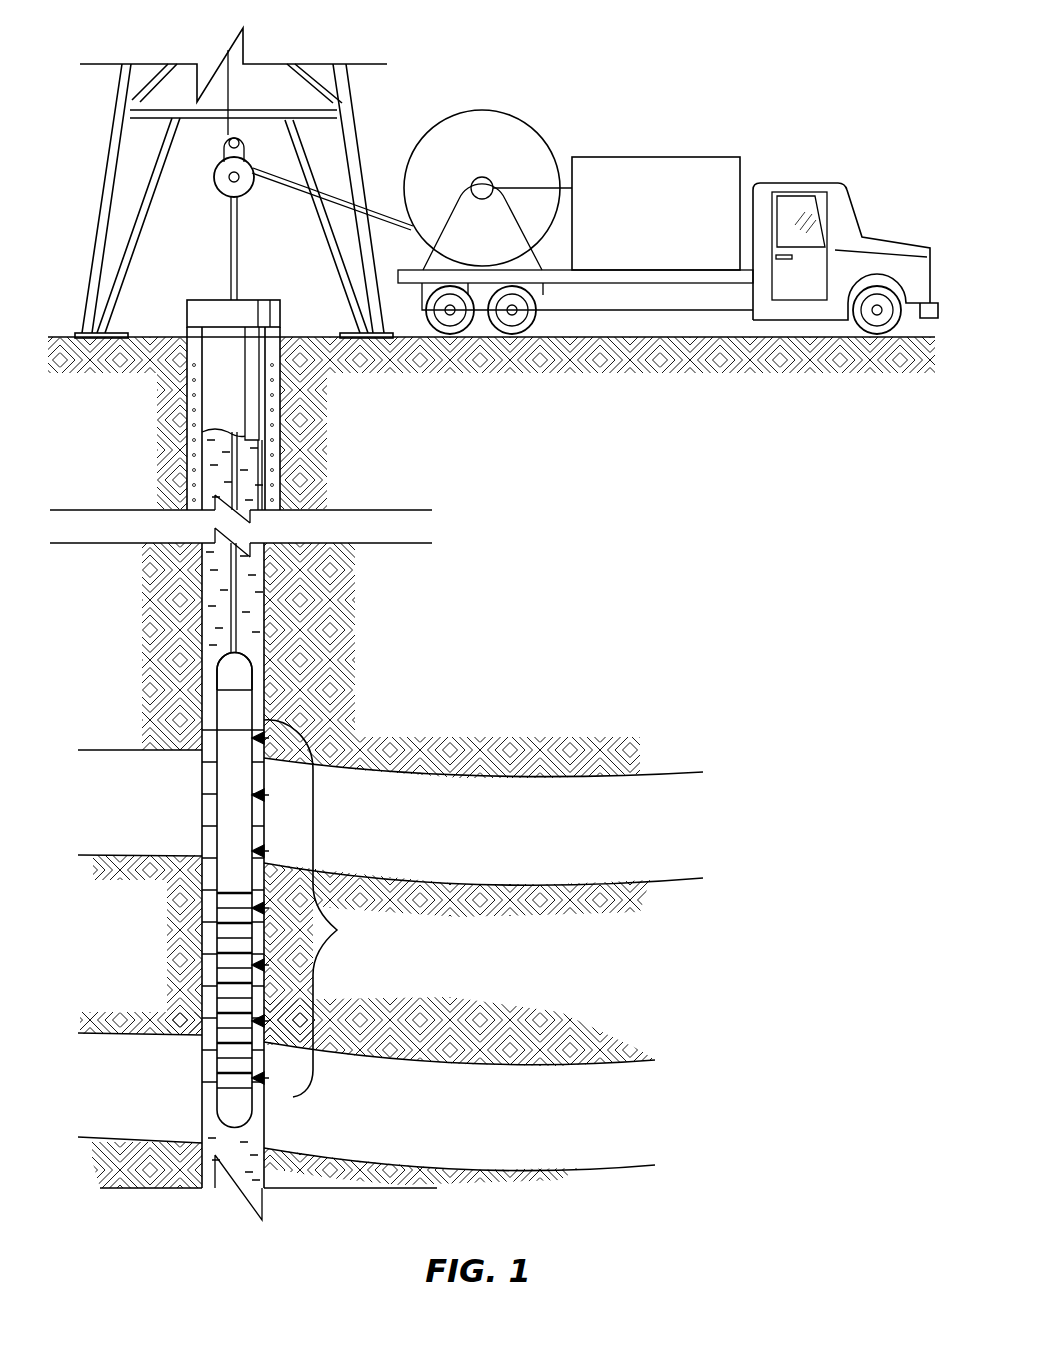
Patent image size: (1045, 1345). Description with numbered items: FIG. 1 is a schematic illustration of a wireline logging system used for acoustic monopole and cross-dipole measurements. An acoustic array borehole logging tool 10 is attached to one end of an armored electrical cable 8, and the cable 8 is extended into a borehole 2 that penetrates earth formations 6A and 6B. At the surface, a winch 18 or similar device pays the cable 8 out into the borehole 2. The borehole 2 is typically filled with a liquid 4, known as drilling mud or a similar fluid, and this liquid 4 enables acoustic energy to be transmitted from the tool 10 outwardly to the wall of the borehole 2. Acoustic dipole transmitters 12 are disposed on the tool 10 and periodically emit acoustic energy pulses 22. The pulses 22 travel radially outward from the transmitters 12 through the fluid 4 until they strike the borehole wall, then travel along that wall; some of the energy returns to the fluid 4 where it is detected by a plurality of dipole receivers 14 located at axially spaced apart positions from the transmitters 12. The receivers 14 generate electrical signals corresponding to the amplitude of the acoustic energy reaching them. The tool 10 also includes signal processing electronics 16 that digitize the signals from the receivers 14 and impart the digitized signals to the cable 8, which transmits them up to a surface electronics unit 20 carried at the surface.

The borehole 2 is at (220, 458).
The liquid 4 is at (223, 1142).
The earth formation 6A is at (471, 843).
The earth formation 6B is at (472, 1138).
The armored electrical cable 8 is at (237, 493).
The acoustic array borehole logging tool 10 is at (225, 712).
The acoustic dipole transmitters 12 is at (257, 738).
The dipole receivers 14 is at (165, 893).
The signal processing electronics 16 is at (225, 670).
The winch 18 is at (481, 110).
The surface electronics unit 20 is at (690, 157).
The acoustic energy pulses 22 is at (320, 908).